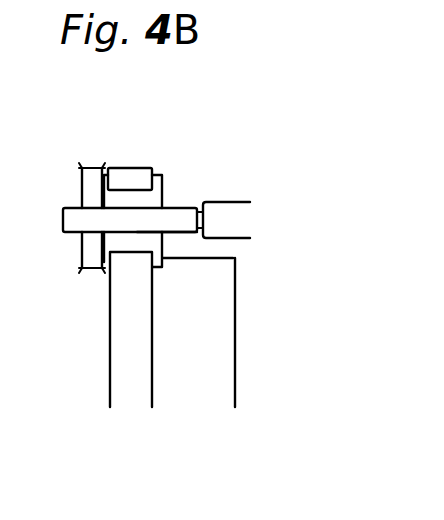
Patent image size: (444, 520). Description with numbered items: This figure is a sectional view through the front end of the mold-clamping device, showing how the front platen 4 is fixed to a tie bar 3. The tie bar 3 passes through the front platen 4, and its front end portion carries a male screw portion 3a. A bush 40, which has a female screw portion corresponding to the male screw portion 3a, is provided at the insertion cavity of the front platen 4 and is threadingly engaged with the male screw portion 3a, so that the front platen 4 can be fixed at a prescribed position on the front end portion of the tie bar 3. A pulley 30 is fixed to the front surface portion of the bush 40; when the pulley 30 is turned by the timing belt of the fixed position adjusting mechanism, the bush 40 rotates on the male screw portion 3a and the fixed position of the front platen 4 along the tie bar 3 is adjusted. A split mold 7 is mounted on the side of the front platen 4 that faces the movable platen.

The tie bar 3 is at (227, 200).
The male screw portion 3a is at (137, 235).
The front platen 4 is at (125, 168).
The split mold 7 is at (235, 368).
The pulley 30 is at (82, 182).
The bush 40 is at (152, 193).